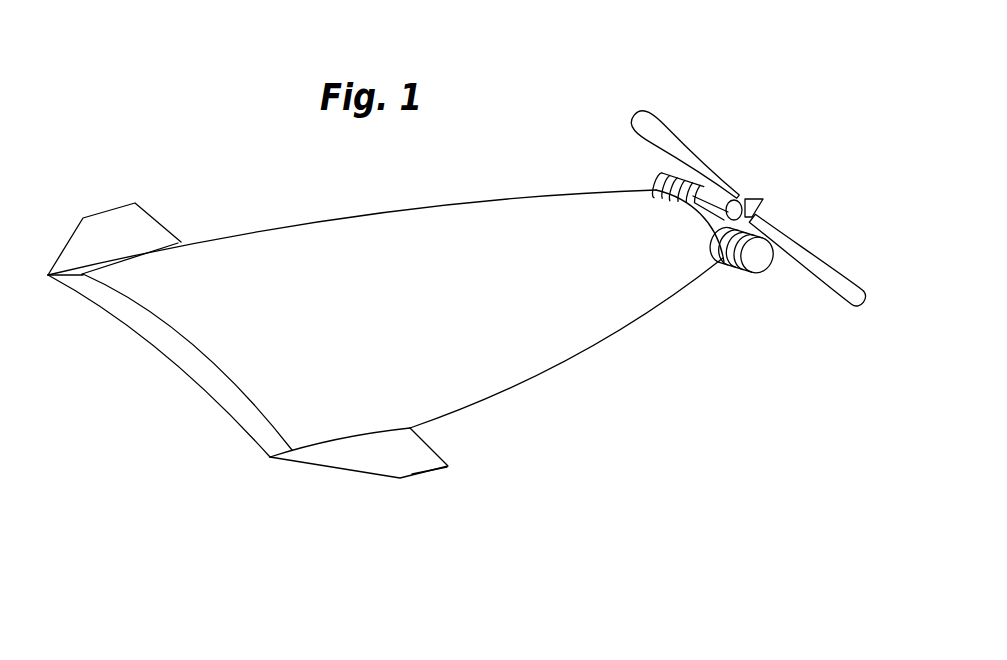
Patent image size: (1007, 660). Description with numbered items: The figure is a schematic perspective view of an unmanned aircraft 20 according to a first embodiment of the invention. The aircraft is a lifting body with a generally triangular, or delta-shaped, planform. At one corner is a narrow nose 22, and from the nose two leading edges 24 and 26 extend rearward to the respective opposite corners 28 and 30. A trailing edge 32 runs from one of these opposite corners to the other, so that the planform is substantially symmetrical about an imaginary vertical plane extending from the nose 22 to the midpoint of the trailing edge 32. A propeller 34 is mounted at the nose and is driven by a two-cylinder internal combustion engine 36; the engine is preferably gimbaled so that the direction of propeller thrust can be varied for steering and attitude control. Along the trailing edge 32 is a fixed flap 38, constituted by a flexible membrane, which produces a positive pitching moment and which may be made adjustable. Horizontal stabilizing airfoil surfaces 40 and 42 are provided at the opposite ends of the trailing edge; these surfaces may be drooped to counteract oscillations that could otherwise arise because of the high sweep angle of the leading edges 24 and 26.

The unmanned aircraft 20 is at (581, 369).
The nose 22 is at (712, 260).
The leading edge 24 is at (632, 313).
The leading edge 26 is at (472, 208).
The opposite corner 28 is at (403, 418).
The opposite corner 30 is at (163, 256).
The trailing edge 32 is at (172, 357).
The propeller 34 is at (808, 256).
The two-cylinder internal combustion engine 36 is at (760, 258).
The fixed flap 38 is at (215, 372).
The horizontal stabilizing airfoil surface 40 is at (410, 465).
The horizontal stabilizing airfoil surface 42 is at (105, 218).